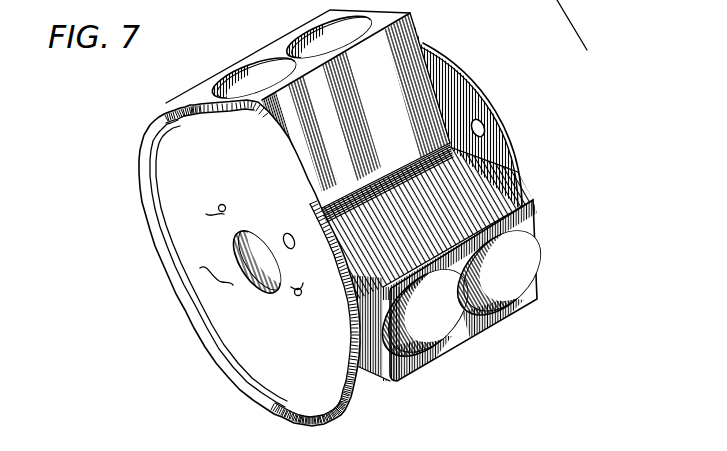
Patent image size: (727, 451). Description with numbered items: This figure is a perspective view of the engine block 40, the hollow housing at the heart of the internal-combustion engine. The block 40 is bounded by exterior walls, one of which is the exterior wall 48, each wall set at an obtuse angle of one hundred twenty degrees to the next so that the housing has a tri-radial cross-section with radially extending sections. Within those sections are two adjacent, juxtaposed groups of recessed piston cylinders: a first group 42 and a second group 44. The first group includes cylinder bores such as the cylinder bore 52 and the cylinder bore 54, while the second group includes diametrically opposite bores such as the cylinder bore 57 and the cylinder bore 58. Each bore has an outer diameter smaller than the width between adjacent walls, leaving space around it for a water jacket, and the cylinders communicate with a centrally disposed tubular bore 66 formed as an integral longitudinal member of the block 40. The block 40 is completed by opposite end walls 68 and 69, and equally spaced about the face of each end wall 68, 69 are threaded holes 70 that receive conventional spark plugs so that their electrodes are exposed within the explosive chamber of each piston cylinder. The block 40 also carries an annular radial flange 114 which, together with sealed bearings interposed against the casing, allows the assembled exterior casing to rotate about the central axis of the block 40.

The engine block 40 is at (410, 97).
The first group of cylinders 42 is at (503, 262).
The second group of cylinders 44 is at (434, 318).
The exterior wall 48 is at (450, 175).
The cylinder bore 52 is at (525, 255).
The cylinder bore 54 is at (305, 38).
The cylinder bore 57 is at (442, 304).
The cylinder bore 58 is at (224, 80).
The tubular bore 66 is at (200, 268).
The end wall 68 is at (165, 198).
The end wall 69 is at (467, 95).
The threaded holes 70 is at (222, 204).
The annular radial flange 114 is at (145, 131).